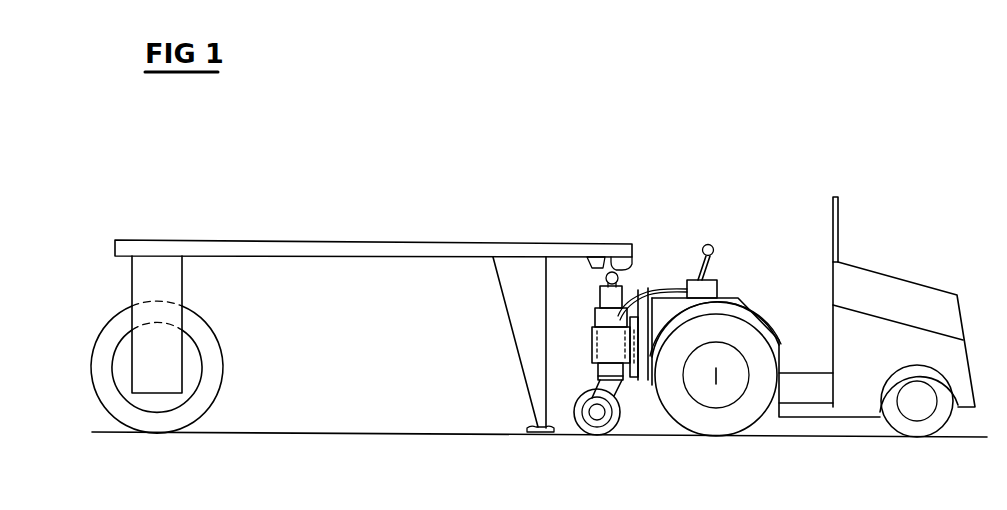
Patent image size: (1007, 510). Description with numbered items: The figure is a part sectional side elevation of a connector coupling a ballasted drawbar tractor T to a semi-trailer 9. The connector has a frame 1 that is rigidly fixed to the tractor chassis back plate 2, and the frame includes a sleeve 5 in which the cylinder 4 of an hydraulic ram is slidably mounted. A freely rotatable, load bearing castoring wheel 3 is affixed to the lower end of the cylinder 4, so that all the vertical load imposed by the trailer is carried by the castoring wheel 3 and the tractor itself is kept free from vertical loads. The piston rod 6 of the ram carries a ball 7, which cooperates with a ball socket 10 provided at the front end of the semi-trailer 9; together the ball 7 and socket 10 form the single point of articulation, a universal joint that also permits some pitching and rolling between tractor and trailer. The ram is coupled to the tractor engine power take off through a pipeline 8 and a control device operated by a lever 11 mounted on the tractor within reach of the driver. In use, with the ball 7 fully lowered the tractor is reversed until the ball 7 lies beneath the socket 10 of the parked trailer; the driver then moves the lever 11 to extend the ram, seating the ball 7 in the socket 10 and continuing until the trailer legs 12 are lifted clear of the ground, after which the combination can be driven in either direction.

The frame 1 is at (634, 350).
The tractor chassis back plate 2 is at (646, 290).
The castoring wheel 3 is at (596, 392).
The cylinder 4 is at (605, 372).
The sleeve 5 is at (593, 350).
The piston rod 6 is at (597, 293).
The ball 7 is at (613, 258).
The pipeline 8 is at (670, 287).
The semi-trailer 9 is at (272, 248).
The ball socket 10 is at (607, 247).
The lever 11 is at (703, 287).
The trailer legs 12 is at (533, 386).
The drawbar tractor T is at (858, 302).